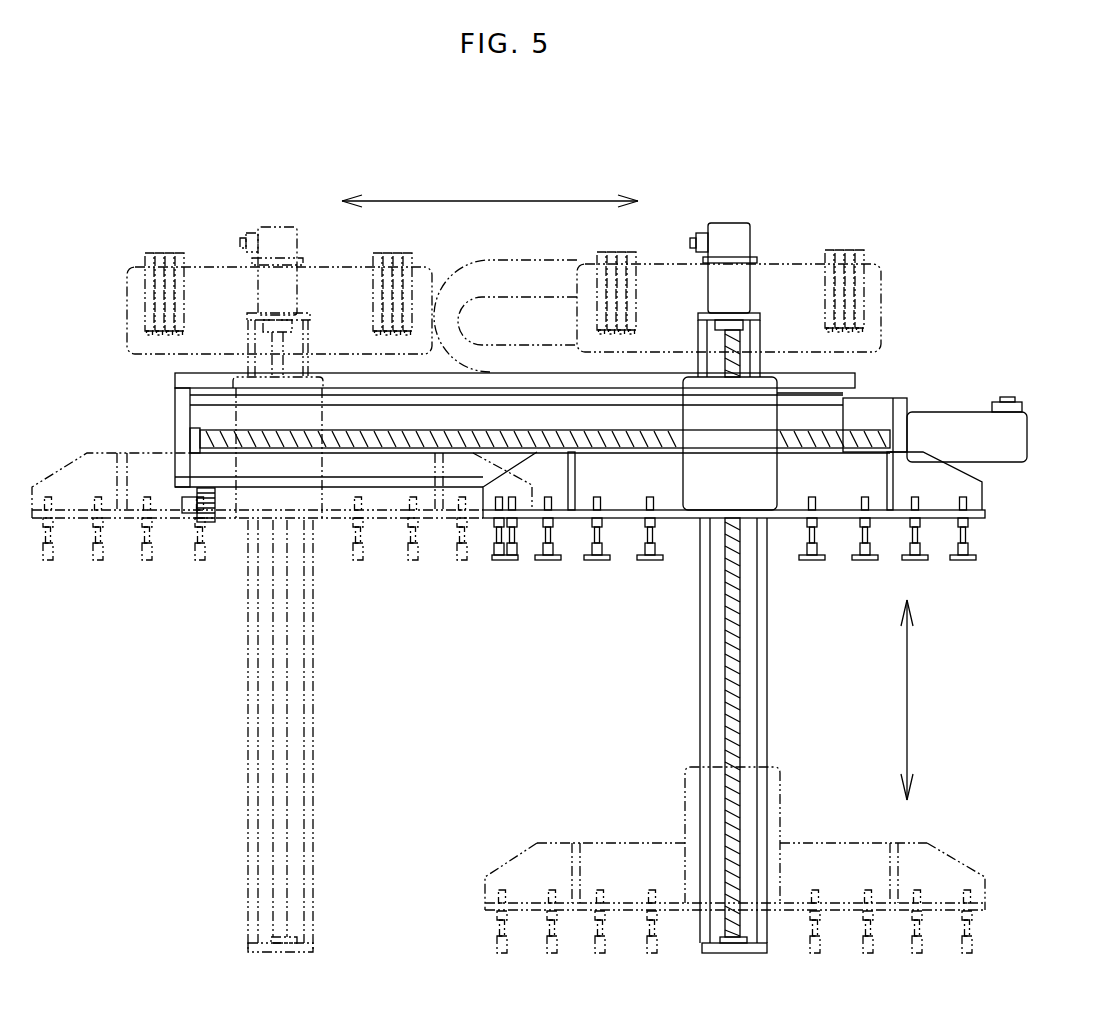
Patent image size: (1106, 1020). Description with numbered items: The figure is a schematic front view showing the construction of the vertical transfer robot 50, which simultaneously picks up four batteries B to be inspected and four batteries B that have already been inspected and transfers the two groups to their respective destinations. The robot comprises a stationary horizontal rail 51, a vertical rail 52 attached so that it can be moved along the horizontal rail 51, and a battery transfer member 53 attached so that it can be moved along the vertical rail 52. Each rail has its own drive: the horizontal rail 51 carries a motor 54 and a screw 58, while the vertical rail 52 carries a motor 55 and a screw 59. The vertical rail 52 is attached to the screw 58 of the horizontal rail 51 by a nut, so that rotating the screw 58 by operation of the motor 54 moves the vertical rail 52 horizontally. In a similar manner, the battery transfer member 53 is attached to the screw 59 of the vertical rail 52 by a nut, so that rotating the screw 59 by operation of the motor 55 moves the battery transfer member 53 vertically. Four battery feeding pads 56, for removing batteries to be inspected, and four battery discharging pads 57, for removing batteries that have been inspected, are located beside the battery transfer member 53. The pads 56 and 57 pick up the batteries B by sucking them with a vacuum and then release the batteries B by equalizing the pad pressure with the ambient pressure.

The vertical transfer robot 50 is at (703, 173).
The stationary horizontal rail 51 is at (335, 485).
The vertical rail 52 is at (760, 672).
The battery transfer member 53 is at (485, 503).
The motor 54 is at (973, 412).
The motor 55 is at (735, 228).
The battery feeding pads 56 is at (862, 535).
The battery discharging pads 57 is at (596, 535).
The screw 58 is at (262, 447).
The screw 59 is at (735, 727).
The batteries B is at (500, 561).